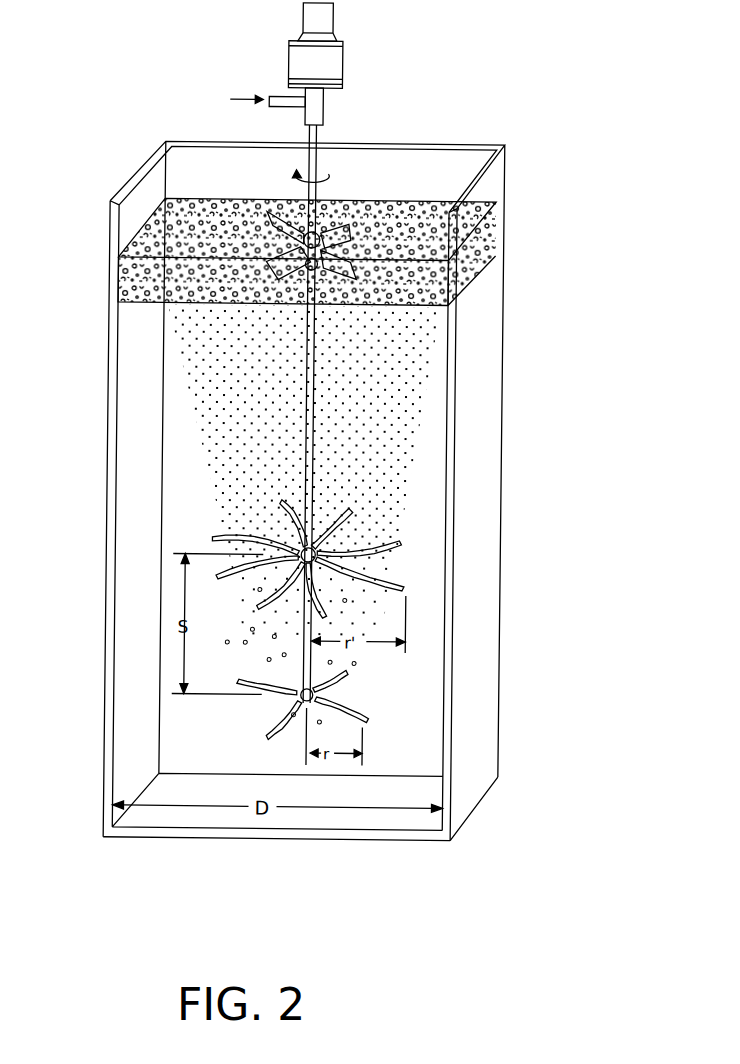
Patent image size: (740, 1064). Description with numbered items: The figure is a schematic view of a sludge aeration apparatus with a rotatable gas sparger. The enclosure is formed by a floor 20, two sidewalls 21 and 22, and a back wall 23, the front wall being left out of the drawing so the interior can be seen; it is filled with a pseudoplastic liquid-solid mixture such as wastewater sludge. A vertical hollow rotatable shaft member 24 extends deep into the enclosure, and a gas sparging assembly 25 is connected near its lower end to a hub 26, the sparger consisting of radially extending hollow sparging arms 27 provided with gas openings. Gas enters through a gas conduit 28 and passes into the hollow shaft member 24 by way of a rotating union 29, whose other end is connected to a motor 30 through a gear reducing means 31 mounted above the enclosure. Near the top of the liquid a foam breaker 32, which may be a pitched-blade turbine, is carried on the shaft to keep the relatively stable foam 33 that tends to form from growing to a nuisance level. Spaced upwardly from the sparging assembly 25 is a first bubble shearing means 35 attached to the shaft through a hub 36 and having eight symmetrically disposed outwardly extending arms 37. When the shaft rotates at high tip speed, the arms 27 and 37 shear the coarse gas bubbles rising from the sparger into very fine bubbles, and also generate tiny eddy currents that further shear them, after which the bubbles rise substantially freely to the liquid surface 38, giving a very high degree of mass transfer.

The floor 20 is at (306, 493).
The sidewall 21 is at (512, 446).
The sidewall 22 is at (103, 432).
The back wall 23 is at (192, 140).
The rotatable shaft member 24 is at (309, 408).
The gas sparging assembly 25 is at (314, 710).
The hub 26 is at (293, 694).
The sparging arms 27 is at (278, 716).
The gas conduit 28 is at (294, 107).
The rotating union 29 is at (320, 110).
The motor 30 is at (326, 17).
The gear reducing means 31 is at (338, 67).
The foam breaker 32 is at (342, 231).
The foam 33 is at (333, 252).
The first bubble shearing means 35 is at (241, 582).
The hub 36 is at (321, 555).
The arms 37 is at (405, 542).
The liquid surface 38 is at (484, 262).